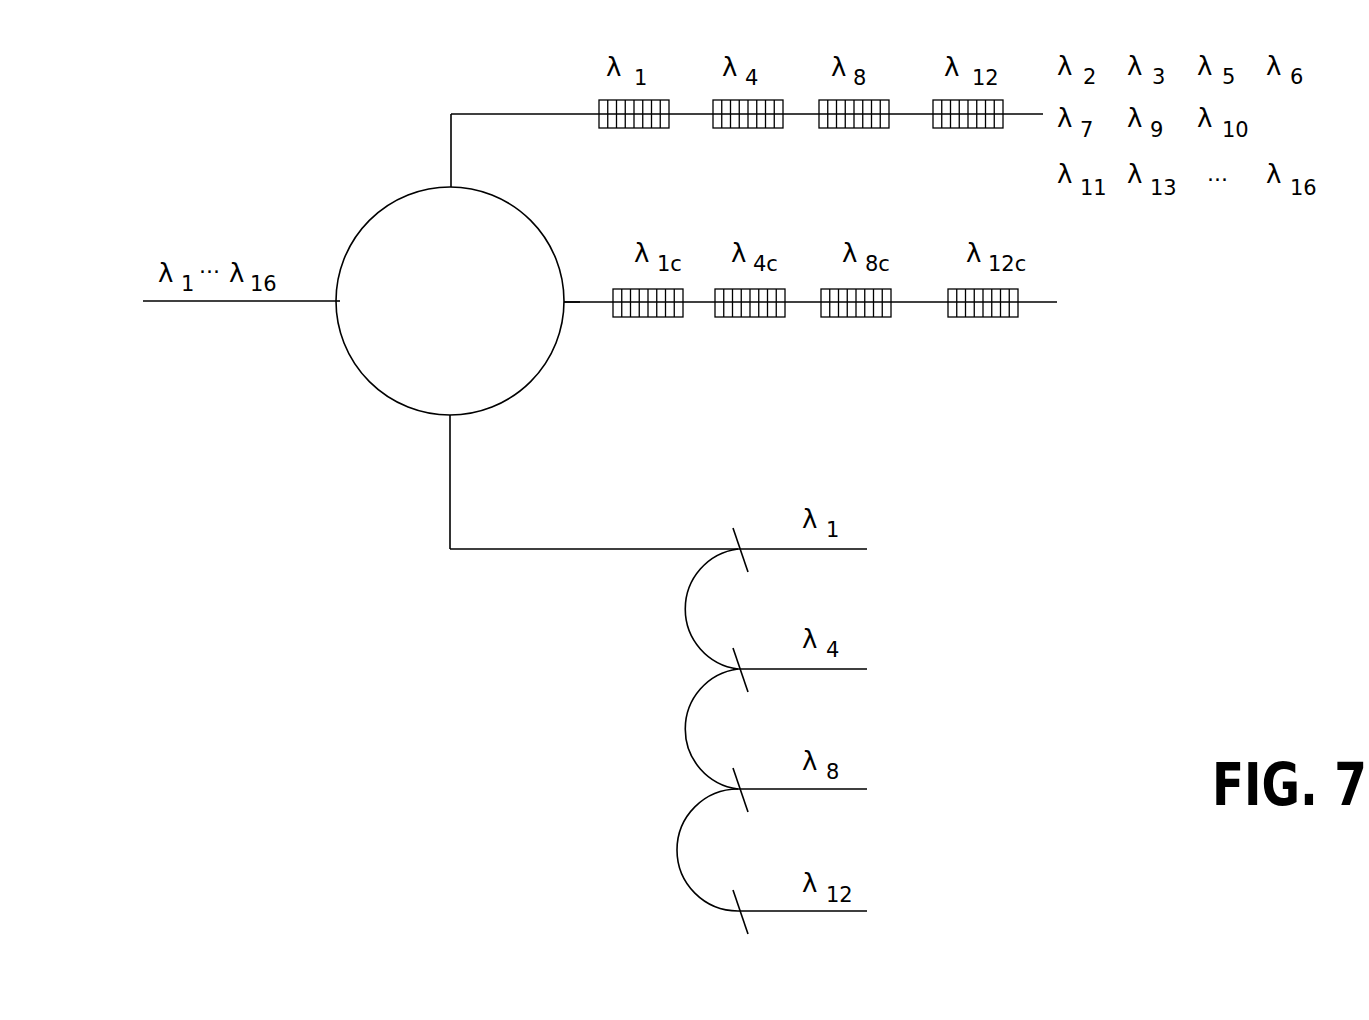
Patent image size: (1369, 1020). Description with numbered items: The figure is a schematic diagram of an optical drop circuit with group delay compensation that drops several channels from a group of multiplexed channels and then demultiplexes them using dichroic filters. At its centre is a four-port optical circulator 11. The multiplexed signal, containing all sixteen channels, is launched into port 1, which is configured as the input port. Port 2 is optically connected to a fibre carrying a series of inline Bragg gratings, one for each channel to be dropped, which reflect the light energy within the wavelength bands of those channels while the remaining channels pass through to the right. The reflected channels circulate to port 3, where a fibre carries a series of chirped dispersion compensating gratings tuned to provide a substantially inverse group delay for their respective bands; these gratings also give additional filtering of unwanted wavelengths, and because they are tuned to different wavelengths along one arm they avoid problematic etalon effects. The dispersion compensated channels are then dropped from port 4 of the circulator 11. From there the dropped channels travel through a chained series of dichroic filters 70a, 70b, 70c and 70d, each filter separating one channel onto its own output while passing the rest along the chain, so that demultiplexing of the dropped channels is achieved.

The optical circulator 11 is at (383, 394).
The port 1 is at (353, 301).
The port 2 is at (453, 172).
The port 3 is at (558, 306).
The port 4 is at (453, 464).
The dichroic filter 70a is at (738, 532).
The dichroic filter 70b is at (742, 652).
The dichroic filter 70c is at (742, 773).
The dichroic filter 70d is at (742, 894).